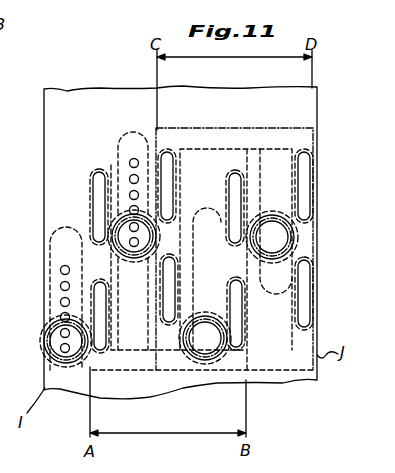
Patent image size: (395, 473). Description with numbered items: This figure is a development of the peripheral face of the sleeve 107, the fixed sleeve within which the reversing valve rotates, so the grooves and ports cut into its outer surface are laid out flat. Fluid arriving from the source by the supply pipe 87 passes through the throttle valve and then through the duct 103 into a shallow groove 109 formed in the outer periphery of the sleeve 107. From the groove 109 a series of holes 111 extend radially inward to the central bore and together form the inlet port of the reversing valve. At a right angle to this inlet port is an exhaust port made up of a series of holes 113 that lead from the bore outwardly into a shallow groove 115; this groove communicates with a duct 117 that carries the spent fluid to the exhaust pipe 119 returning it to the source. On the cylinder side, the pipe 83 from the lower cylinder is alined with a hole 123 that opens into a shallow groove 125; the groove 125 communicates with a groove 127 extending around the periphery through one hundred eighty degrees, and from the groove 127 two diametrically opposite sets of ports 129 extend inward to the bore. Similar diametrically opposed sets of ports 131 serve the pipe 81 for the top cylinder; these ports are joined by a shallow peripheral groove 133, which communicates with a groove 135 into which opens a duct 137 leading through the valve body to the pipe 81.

The sleeve 107 is at (52, 116).
The shallow groove 109 is at (126, 133).
The holes 111 is at (129, 193).
The holes 113 is at (61, 301).
The shallow groove 115 is at (50, 249).
The duct 117 is at (57, 364).
The exhaust pipe 119 is at (50, 334).
The hole 123 is at (275, 224).
The shallow groove 125 is at (278, 158).
The groove 127 is at (257, 128).
The ports 129 is at (167, 257).
The ports 131 is at (99, 283).
The shallow peripheral groove 133 is at (146, 371).
The groove 135 is at (181, 318).
The duct 137 is at (224, 353).
The pipe 81 is at (208, 362).
The pipe 83 is at (270, 254).
The supply pipe 87 is at (124, 292).
The duct 103 is at (137, 263).